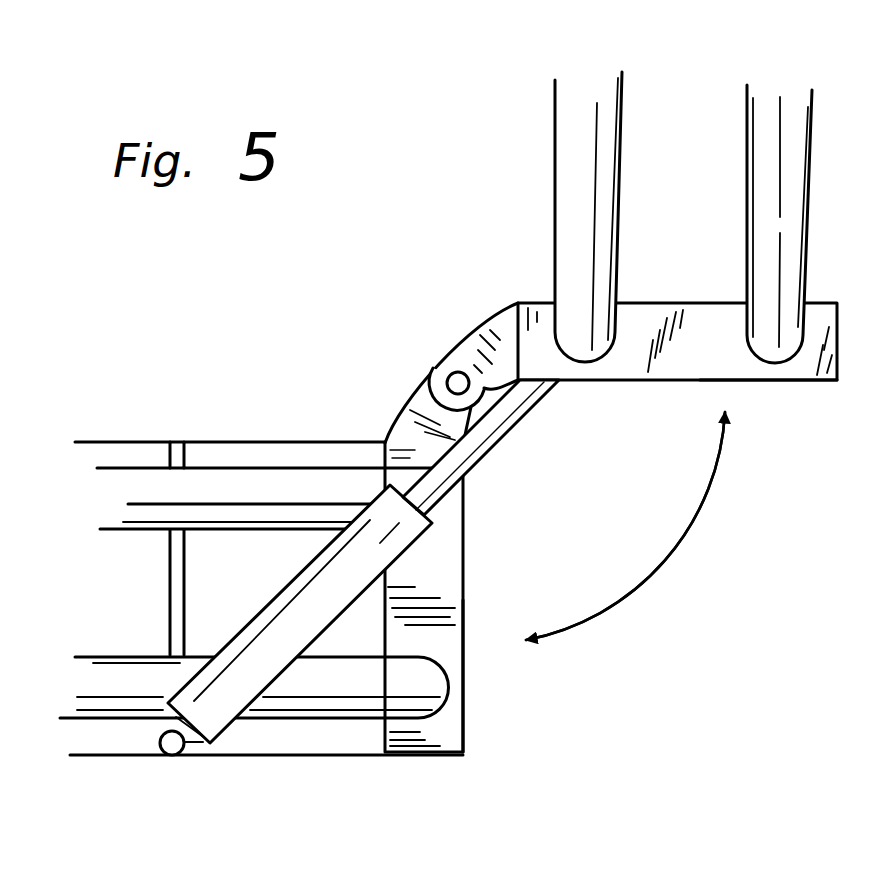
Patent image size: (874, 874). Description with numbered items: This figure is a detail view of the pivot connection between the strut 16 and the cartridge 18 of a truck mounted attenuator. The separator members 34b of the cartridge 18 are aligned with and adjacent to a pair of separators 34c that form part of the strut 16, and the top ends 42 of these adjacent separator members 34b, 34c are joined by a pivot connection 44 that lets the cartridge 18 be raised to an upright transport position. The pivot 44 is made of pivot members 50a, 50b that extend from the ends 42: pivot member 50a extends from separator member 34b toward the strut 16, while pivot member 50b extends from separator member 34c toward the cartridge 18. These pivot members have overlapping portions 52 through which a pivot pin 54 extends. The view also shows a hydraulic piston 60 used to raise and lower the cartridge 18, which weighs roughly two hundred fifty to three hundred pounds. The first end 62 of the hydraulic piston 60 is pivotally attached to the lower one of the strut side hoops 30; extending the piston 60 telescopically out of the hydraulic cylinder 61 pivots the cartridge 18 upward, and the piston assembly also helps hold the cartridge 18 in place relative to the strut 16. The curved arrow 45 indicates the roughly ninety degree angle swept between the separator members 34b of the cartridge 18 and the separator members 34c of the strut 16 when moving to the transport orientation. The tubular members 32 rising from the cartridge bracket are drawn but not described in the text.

The cartridge 18 is at (490, 47).
The strut 16 is at (130, 433).
The strut side hoops 30 is at (138, 526).
The tubular members 32 is at (750, 130).
The top ends 42 is at (518, 303).
The pivot connection 44 is at (350, 288).
The pivot member 50a is at (469, 324).
The pivot member 50b is at (412, 396).
The overlapping portions 52 is at (437, 366).
The pivot pin 54 is at (472, 384).
The hydraulic piston 60 is at (483, 443).
The hydraulic cylinder 61 is at (293, 637).
The first end 62 is at (172, 755).
The separator members 34b is at (737, 381).
The separators 34c is at (465, 645).
The angle 45 is at (680, 543).